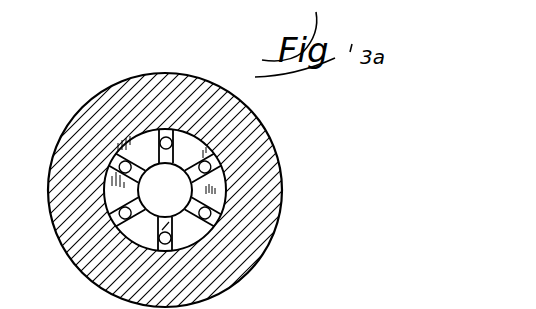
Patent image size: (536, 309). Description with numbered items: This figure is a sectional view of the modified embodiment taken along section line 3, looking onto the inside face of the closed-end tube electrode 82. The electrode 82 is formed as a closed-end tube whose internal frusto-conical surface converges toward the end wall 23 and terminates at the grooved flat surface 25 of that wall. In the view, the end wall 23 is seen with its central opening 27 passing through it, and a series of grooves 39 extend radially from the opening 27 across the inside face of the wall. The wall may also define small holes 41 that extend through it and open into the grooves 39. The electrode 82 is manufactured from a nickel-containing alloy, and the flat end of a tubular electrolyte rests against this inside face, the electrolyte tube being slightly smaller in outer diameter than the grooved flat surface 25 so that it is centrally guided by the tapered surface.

The section line 3- 3 is at (273, 127).
The end wall 23 is at (142, 137).
The grooved flat surface 25 is at (188, 130).
The central opening 27 is at (181, 200).
The grooves 39 is at (160, 231).
The small holes 41 is at (205, 170).
The electrode 82 is at (297, 213).